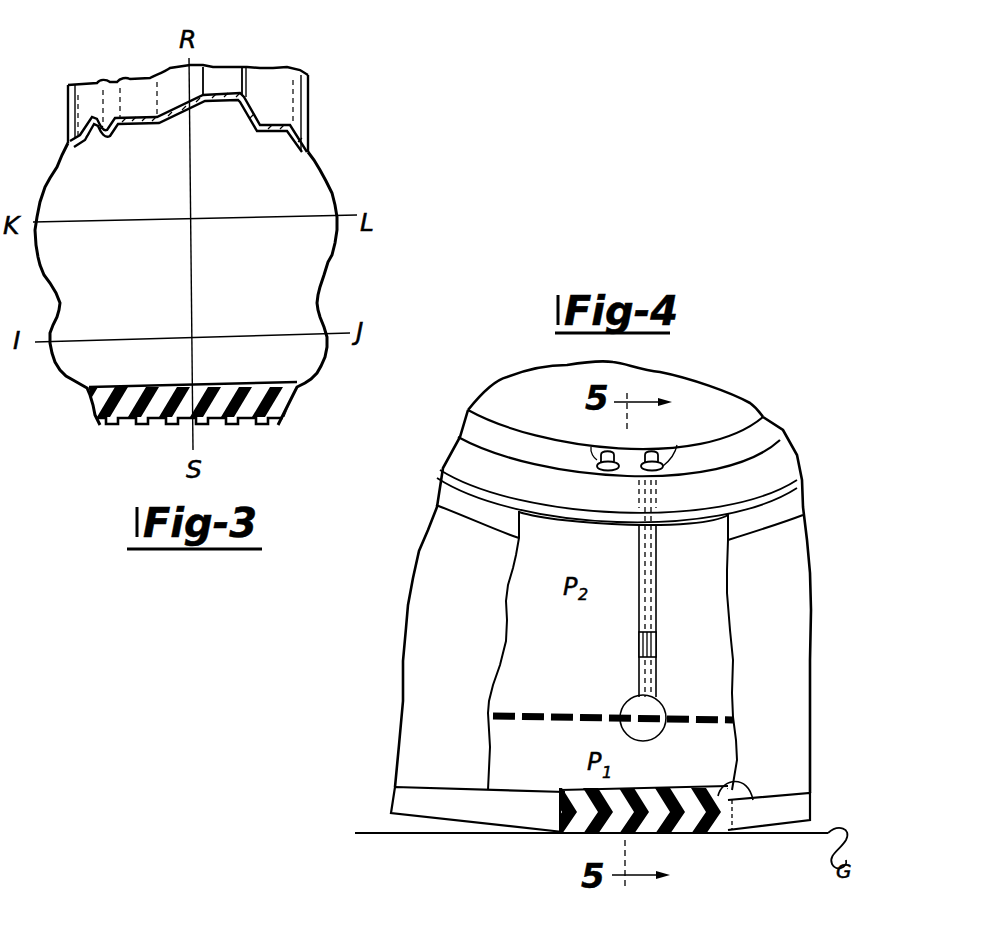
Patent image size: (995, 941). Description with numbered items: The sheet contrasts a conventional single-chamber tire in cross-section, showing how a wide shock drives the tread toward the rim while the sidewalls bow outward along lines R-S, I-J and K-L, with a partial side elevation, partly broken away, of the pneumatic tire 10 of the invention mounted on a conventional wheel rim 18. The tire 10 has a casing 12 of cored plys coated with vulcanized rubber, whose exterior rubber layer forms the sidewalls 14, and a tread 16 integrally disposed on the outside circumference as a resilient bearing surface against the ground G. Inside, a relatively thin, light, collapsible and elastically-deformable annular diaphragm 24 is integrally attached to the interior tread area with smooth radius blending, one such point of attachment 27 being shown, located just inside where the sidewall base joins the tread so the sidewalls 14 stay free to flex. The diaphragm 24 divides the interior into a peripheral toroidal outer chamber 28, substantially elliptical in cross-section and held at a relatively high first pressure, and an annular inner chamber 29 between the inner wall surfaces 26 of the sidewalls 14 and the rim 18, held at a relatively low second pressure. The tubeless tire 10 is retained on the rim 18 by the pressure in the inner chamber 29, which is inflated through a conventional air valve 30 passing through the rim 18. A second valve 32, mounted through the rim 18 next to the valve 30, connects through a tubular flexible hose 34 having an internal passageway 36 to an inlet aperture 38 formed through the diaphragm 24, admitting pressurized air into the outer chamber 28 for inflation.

The pneumatic tire 10 is at (395, 701).
The casing 12 is at (707, 586).
The sidewalls 14 is at (800, 613).
The tread 16 is at (547, 827).
The wheel rim 18 is at (513, 440).
The diaphragm 24 is at (715, 727).
The inner wall surfaces 26 is at (710, 657).
The point of attachment 27 is at (753, 800).
The outer annular air chamber 28 is at (563, 733).
The inner chamber 29 is at (520, 693).
The air valve 30 is at (597, 458).
The second valve 32 is at (664, 467).
The tubular flexible hose 34 is at (657, 550).
The internal passageway 36 is at (638, 642).
The inlet aperture 38 is at (652, 740).